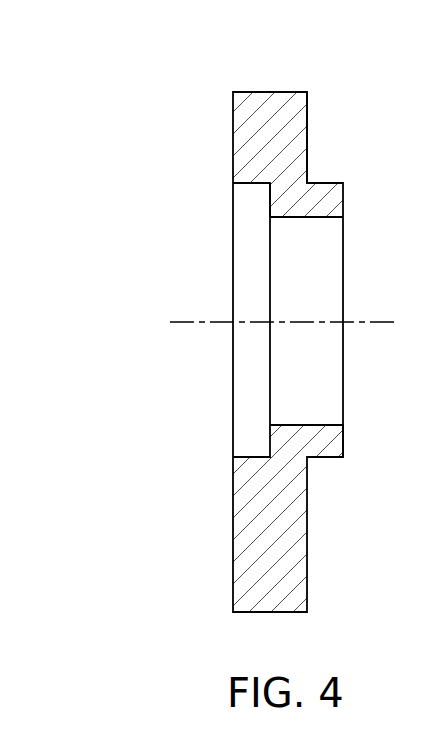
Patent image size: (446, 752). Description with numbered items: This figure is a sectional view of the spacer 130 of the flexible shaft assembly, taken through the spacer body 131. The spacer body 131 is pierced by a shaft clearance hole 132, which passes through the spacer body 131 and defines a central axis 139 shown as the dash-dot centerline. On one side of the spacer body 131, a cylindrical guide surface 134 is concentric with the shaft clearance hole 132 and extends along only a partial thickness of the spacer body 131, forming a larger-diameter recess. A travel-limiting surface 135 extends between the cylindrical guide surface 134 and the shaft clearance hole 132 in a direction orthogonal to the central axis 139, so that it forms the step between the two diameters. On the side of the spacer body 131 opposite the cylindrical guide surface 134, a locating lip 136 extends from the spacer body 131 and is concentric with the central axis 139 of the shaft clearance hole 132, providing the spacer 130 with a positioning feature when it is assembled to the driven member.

The spacer 130 is at (341, 84).
The spacer body 131 is at (272, 91).
The shaft clearance hole 132 is at (315, 424).
The cylindrical guide surface 134 is at (248, 184).
The travel-limiting surface 135 is at (270, 443).
The locating lip 136 is at (328, 458).
The central axis 139 is at (377, 318).